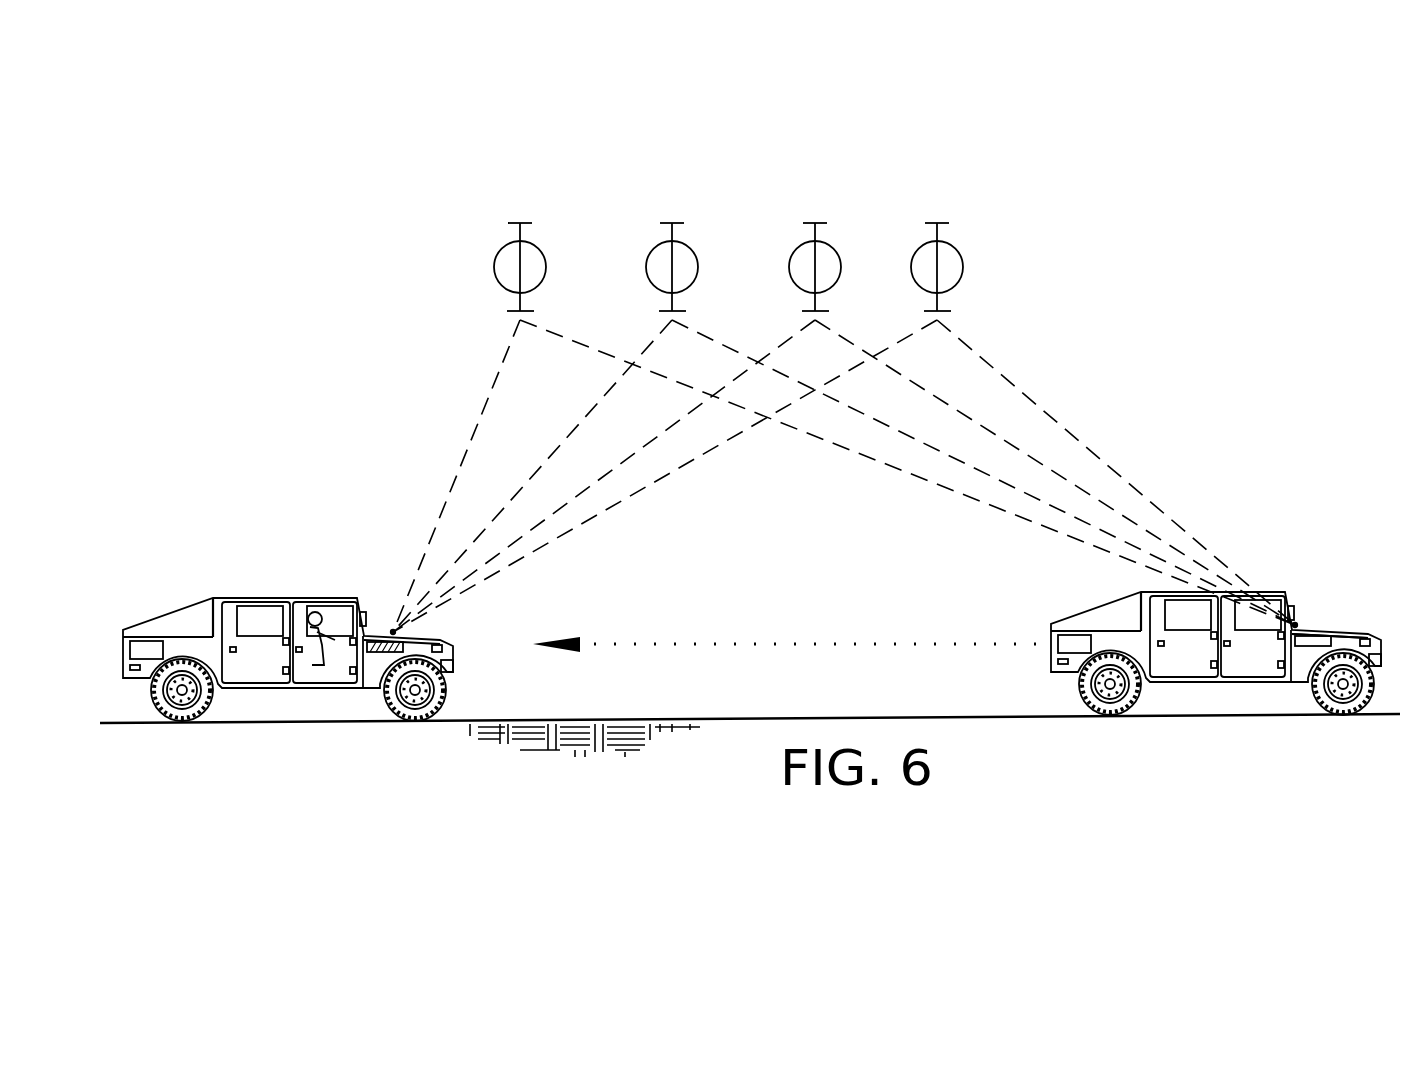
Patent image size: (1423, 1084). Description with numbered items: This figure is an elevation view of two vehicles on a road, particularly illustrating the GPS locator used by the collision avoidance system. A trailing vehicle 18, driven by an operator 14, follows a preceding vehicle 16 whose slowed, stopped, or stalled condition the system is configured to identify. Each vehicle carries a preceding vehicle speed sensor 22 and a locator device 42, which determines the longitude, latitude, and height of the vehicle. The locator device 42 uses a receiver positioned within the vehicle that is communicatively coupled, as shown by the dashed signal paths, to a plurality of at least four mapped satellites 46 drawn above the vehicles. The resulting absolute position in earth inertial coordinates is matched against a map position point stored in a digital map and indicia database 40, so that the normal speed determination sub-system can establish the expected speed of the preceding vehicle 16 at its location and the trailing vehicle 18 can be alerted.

The operator 14 is at (290, 600).
The preceding vehicle 16 is at (1053, 640).
The trailing vehicle 18 is at (195, 603).
The preceding vehicle speed sensor 22 is at (1340, 632).
The digital map and indicia database 40 is at (440, 640).
The locator device 42 is at (366, 472).
The mapped satellites 46 is at (540, 252).